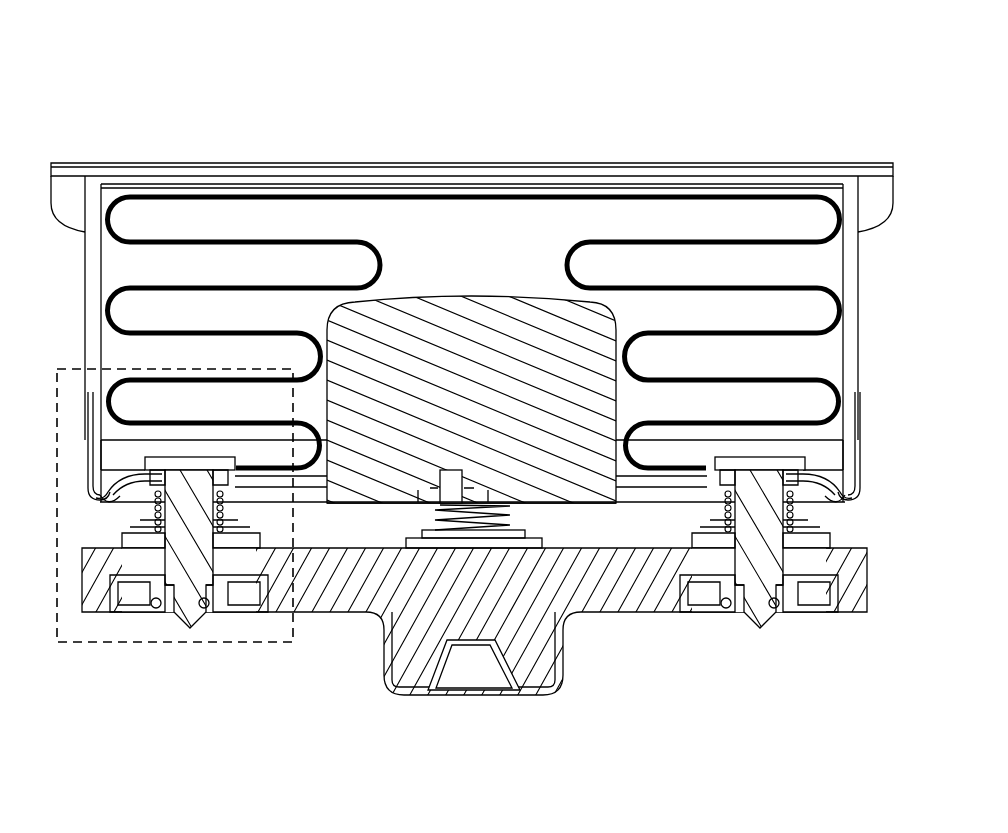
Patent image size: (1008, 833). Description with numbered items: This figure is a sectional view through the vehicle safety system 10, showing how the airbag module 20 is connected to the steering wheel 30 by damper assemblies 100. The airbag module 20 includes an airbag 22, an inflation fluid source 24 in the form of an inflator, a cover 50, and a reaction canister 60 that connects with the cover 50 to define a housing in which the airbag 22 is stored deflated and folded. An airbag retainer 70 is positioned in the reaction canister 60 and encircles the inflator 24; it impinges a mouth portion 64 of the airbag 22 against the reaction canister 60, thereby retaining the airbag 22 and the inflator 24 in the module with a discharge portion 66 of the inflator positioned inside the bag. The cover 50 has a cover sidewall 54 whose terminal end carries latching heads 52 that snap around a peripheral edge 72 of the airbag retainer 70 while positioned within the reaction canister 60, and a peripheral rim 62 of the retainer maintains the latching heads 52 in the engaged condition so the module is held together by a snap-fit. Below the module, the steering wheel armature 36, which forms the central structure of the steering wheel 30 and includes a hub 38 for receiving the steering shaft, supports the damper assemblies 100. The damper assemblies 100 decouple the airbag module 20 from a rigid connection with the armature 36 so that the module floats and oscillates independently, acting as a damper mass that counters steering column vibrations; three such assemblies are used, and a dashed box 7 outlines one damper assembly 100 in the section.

The detail region 7 is at (127, 645).
The vehicle safety system 10 is at (110, 90).
The airbag module 20 is at (148, 100).
The airbag 22 is at (437, 186).
The inflation fluid source 24 is at (464, 356).
The steering wheel 30 is at (590, 585).
The steering wheel armature 36 is at (482, 620).
The hub 38 is at (427, 665).
The cover 50 is at (347, 173).
The latching heads 52 is at (100, 477).
The cover sidewall 54 is at (93, 325).
The reaction canister 60 is at (863, 450).
The peripheral rim 62 is at (90, 424).
The mouth portion 64 is at (617, 505).
The discharge portion 66 is at (530, 330).
The airbag retainer 70 is at (668, 452).
The peripheral edge 72 is at (820, 455).
The damper assemblies 100 is at (195, 662).